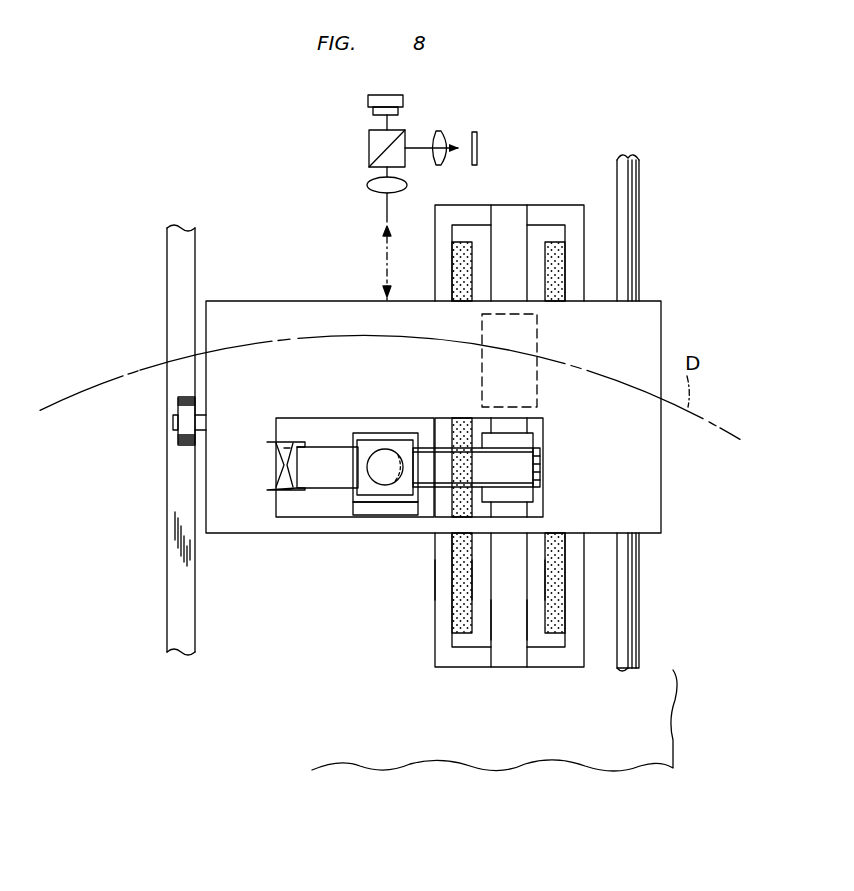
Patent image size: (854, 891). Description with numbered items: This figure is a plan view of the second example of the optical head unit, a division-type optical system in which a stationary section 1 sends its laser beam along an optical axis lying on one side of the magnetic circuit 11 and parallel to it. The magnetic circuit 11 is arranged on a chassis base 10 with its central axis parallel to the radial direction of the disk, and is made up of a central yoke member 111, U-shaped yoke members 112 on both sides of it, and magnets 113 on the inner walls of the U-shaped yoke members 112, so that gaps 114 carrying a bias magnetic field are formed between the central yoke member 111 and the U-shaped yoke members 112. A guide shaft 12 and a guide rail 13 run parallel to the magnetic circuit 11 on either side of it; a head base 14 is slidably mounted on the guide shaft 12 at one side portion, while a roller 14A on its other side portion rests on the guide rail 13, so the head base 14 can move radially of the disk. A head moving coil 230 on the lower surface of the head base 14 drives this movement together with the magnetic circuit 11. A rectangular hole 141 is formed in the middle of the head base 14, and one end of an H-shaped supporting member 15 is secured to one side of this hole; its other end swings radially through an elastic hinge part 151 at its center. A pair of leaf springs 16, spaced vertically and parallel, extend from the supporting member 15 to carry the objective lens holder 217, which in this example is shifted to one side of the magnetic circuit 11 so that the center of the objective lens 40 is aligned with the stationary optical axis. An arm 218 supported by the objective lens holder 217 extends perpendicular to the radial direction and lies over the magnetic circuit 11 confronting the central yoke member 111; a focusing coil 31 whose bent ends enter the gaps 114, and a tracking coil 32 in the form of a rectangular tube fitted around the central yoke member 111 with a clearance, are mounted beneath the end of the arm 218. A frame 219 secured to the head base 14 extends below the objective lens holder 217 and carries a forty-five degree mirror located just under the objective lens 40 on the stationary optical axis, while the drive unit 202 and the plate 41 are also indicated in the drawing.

The stationary section 1 is at (496, 90).
The chassis base 10 is at (662, 727).
The magnetic circuit 11 is at (492, 471).
The central yoke member 111 is at (508, 657).
The U-shaped yoke members 112 is at (442, 588).
The magnets 113 is at (457, 613).
The gaps 114 is at (480, 620).
The guide shaft 12 is at (622, 593).
The guide rail 13 is at (183, 608).
The head base 14 is at (230, 522).
The roller 14A is at (177, 407).
The rectangular hole 141 is at (315, 505).
The supporting member 15 is at (270, 478).
The elastic hinge part 151 is at (283, 452).
The leaf springs 16 is at (332, 455).
The drive unit 202 is at (655, 265).
The objective lens holder 217 is at (405, 442).
The arm 218 is at (515, 465).
The frame 219 is at (365, 507).
The head moving coil 230 is at (537, 342).
The focusing coil 31 is at (538, 437).
The tracking coil 32 is at (540, 478).
The objective lens 40 is at (385, 458).
The plate 41 is at (392, 508).